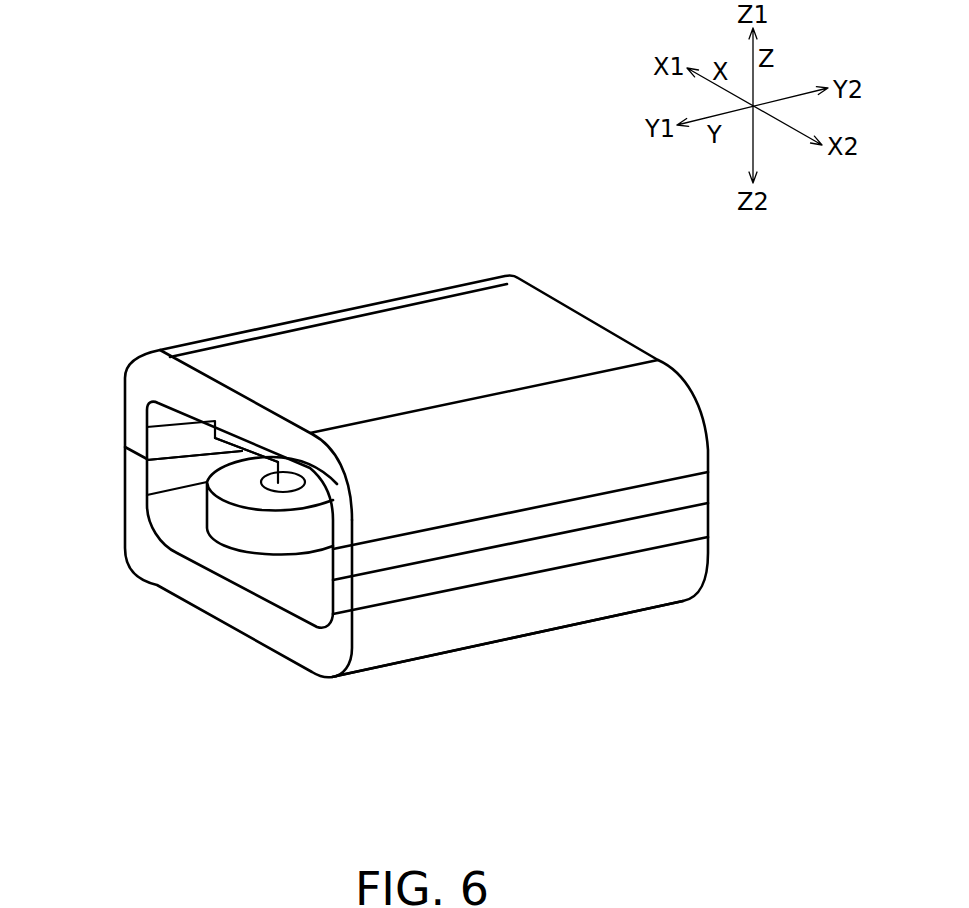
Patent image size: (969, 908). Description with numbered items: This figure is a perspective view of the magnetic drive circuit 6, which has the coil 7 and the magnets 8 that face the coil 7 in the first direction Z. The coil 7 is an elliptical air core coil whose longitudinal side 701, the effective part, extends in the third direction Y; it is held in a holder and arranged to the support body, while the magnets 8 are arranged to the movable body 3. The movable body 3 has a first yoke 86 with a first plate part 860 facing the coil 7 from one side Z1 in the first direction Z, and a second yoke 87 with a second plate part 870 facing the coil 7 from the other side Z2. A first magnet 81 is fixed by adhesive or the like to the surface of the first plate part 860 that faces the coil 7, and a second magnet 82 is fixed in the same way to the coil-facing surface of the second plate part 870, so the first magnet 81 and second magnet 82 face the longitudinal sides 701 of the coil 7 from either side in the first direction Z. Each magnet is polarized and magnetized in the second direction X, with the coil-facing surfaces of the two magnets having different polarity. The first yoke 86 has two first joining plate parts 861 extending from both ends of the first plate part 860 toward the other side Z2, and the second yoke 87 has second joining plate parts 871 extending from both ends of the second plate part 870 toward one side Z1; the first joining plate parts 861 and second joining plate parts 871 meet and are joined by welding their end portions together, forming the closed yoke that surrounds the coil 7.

The magnetic drive circuit 6 is at (184, 284).
The movable body 3 is at (520, 760).
The first plate part 860 is at (553, 323).
The first joining plate parts 861 is at (127, 432).
The second plate part 870 is at (251, 622).
The second joining plate parts 871 is at (130, 470).
The first yoke 86 is at (400, 493).
The second yoke 87 is at (468, 614).
The coil 7 is at (217, 513).
The longitudinal side 701 is at (228, 528).
The magnets 8 is at (276, 603).
The first magnet 81 is at (303, 476).
The second magnet 82 is at (312, 577).